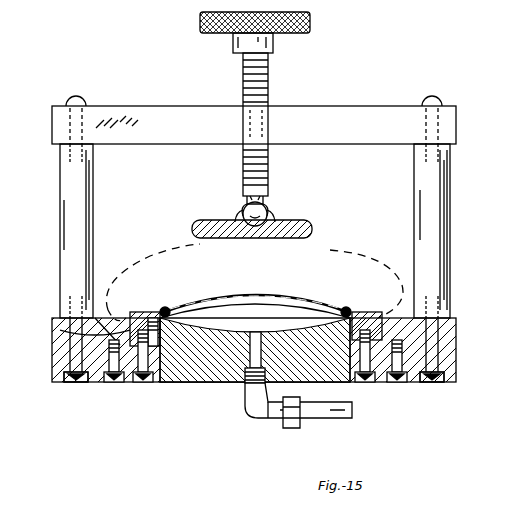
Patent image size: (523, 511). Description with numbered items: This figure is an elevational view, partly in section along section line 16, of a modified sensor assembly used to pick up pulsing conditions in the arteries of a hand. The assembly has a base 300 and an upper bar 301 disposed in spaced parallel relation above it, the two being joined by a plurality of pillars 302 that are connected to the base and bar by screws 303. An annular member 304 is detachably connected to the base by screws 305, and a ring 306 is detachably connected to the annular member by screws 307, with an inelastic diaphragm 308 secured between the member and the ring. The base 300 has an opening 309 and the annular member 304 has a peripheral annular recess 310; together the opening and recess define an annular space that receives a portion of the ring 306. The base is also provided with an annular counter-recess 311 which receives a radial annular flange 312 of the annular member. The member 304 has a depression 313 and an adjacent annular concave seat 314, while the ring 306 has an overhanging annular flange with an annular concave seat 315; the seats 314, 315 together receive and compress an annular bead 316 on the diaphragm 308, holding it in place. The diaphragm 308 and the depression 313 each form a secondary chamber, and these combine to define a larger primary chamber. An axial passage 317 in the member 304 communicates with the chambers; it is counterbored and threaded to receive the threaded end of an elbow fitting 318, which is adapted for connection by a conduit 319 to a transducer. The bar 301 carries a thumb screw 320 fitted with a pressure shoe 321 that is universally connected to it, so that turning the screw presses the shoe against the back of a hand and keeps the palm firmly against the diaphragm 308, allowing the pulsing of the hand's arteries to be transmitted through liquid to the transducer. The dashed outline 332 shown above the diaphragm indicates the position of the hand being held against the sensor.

The section line 16 is at (227, 258).
The base 300 is at (456, 366).
The upper bar 301 is at (332, 114).
The pillars 302 is at (95, 186).
The screws 303 is at (88, 102).
The annular member 304 is at (208, 384).
The screws 305 is at (118, 384).
The ring 306 is at (385, 286).
The screws 307 is at (142, 384).
The inelastic diaphragm 308 is at (246, 296).
The opening 309 is at (124, 318).
The peripheral annular recess 310 is at (160, 384).
The annular counter-recess 311 is at (100, 376).
The radial annular flange 312 is at (408, 380).
The depression 313 is at (226, 318).
The annular concave seat 314 is at (302, 324).
The annular concave seat 315 is at (346, 306).
The annular bead 316 is at (178, 284).
The axial passage 317 is at (250, 384).
The elbow fitting 318 is at (260, 412).
The conduit 319 is at (350, 422).
The thumb screw 320 is at (268, 78).
The pressure shoe 321 is at (283, 222).
The pressure contour 332 is at (340, 258).